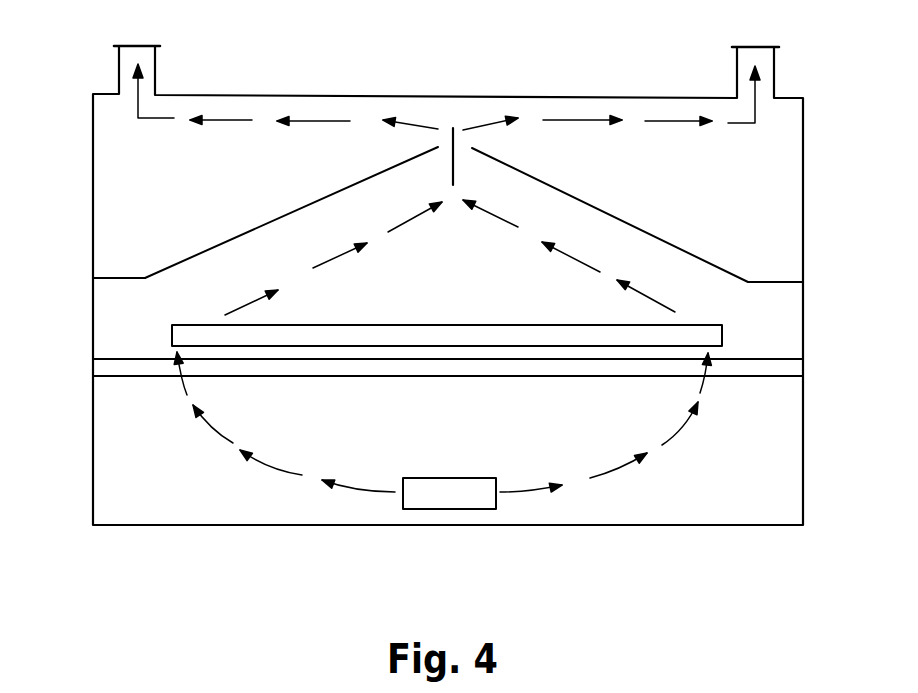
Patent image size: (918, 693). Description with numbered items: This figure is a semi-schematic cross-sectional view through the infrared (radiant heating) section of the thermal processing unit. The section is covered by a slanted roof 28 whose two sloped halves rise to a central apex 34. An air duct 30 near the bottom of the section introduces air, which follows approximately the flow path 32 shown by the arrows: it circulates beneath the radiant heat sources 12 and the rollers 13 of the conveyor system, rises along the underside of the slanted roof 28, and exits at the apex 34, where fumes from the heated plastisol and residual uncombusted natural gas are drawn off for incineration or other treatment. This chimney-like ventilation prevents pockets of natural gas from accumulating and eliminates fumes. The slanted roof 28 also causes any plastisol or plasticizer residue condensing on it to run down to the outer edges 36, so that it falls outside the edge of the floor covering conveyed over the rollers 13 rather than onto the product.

The radiant heat sources 12 is at (727, 325).
The rollers 13 is at (780, 383).
The slanted roof 28 is at (688, 250).
The air duct 30 is at (462, 515).
The flow path 32 is at (137, 105).
The apex 34 is at (457, 130).
The outer edges 36 is at (128, 277).